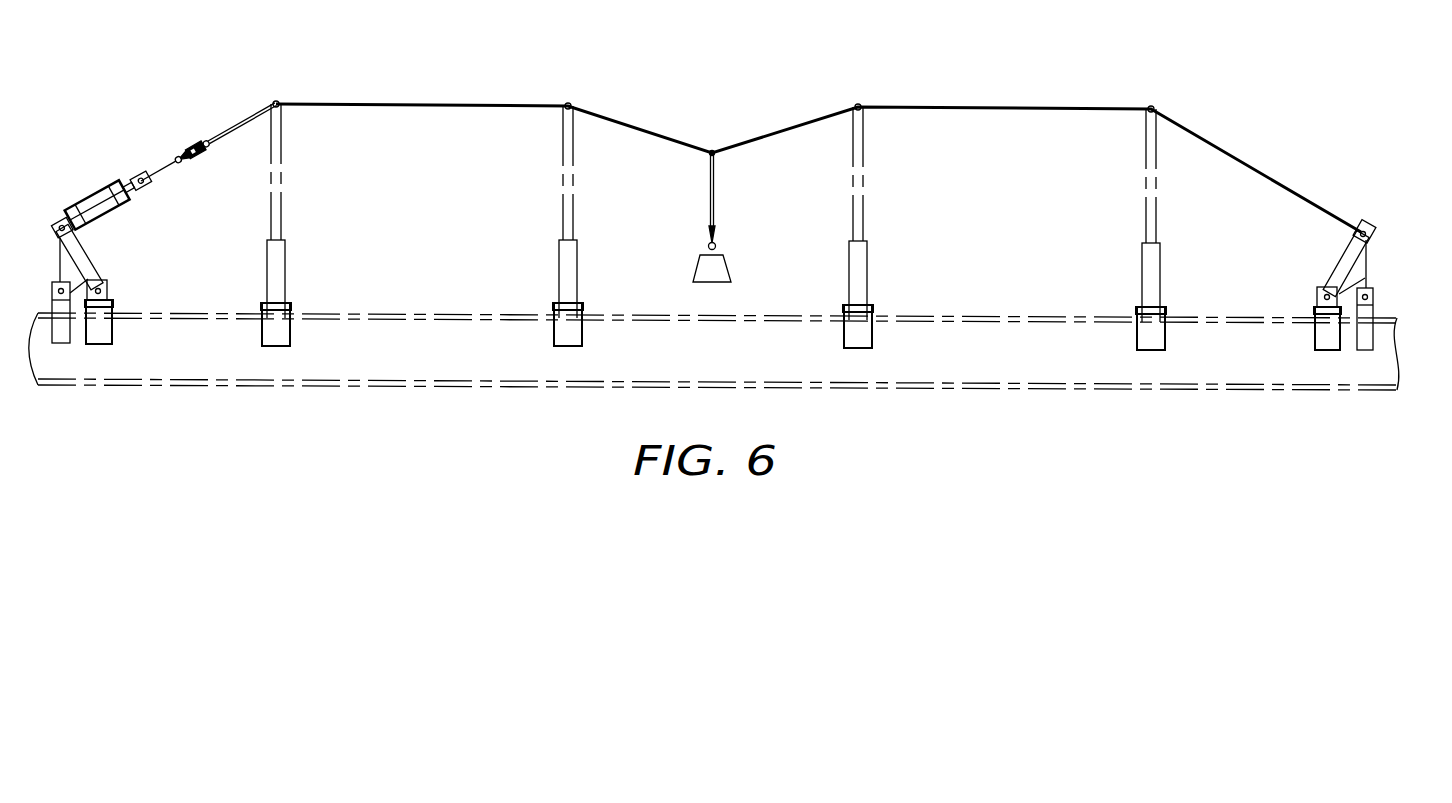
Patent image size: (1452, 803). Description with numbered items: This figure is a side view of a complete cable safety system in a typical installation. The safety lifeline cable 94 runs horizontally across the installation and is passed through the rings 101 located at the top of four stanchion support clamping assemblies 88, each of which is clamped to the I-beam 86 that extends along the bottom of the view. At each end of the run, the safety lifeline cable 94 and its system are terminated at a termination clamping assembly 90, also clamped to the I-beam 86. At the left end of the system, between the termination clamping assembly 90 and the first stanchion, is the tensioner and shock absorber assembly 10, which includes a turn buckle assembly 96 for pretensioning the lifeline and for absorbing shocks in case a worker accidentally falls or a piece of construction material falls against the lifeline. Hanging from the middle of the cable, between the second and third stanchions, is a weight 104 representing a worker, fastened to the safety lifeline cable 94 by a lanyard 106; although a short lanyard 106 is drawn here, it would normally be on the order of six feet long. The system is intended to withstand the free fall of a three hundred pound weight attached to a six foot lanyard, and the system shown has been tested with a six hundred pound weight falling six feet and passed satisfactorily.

The tensioner and shock absorber assembly 10 is at (94, 171).
The I-beam 86 is at (720, 360).
The stanchion support clamping assembly 88 is at (305, 249).
The termination clamping assembly 90 is at (121, 256).
The safety lifeline cable 94 is at (394, 105).
The turn buckle assembly 96 is at (188, 125).
The ring 101 is at (277, 101).
The weight 104 is at (727, 262).
The lanyard 106 is at (714, 203).